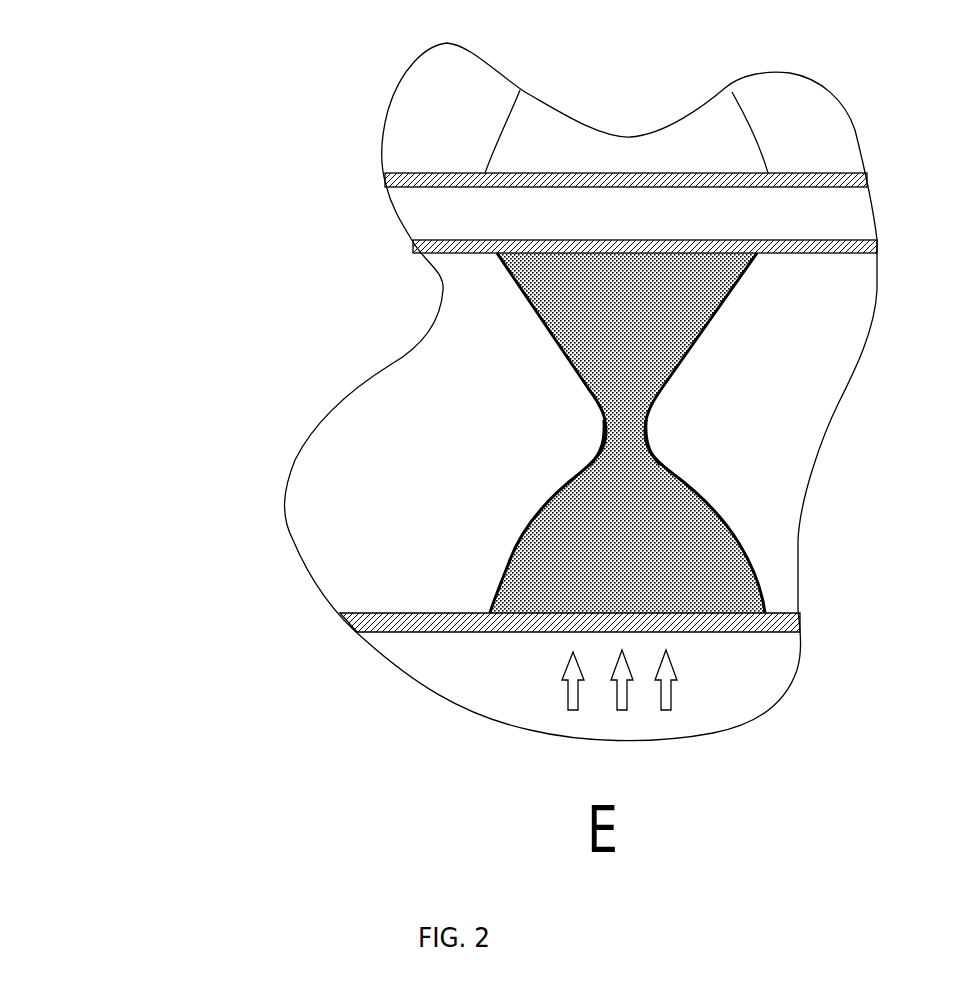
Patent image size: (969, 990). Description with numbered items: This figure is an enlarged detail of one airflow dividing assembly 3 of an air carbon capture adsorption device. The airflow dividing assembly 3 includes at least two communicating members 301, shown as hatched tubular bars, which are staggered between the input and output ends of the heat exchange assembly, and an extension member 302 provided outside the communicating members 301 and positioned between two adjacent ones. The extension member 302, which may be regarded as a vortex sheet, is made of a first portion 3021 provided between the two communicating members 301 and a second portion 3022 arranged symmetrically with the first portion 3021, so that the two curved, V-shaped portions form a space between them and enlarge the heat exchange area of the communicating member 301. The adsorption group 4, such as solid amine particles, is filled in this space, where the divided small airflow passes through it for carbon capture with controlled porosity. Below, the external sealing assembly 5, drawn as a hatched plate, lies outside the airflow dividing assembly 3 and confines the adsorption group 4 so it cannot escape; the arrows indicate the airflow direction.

The airflow dividing assembly 3 is at (123, 110).
The communicating member 301 is at (448, 236).
The extension member 302 is at (257, 250).
The first portion 3021 is at (557, 338).
The second portion 3022 is at (603, 452).
The adsorption group 4 is at (522, 528).
The external sealing assembly 5 is at (440, 613).